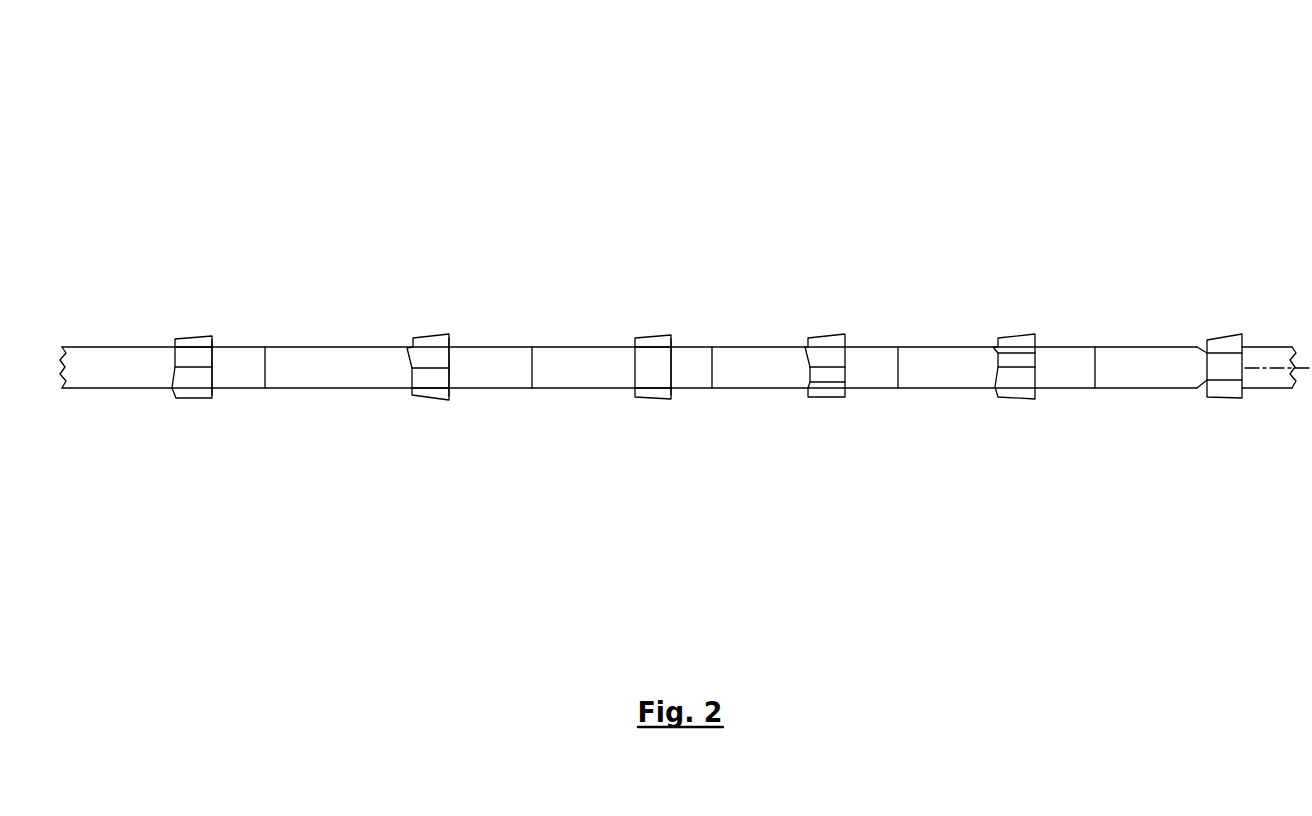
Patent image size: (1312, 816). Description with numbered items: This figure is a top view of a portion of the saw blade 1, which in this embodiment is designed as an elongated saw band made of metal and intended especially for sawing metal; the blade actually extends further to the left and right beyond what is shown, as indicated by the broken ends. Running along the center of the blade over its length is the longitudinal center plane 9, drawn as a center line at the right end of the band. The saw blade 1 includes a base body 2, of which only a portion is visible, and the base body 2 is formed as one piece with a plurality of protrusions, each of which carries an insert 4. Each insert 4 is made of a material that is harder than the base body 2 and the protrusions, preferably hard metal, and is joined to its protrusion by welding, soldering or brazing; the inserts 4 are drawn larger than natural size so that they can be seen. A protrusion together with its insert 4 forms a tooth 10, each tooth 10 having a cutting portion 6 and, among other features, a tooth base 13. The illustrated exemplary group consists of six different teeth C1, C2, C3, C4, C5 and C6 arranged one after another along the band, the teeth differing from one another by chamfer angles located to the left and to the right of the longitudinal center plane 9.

The saw blade 1 is at (686, 295).
The base body 2 is at (337, 365).
The insert 4 is at (621, 353).
The cutting portion 6 is at (213, 360).
The longitudinal center plane 9 is at (1281, 368).
The tooth 10 is at (824, 353).
The tooth base 13 is at (531, 367).
The tooth C1 is at (1229, 390).
The tooth C2 is at (1020, 387).
The tooth C3 is at (824, 390).
The tooth C4 is at (653, 390).
The tooth C5 is at (432, 390).
The tooth C6 is at (195, 383).